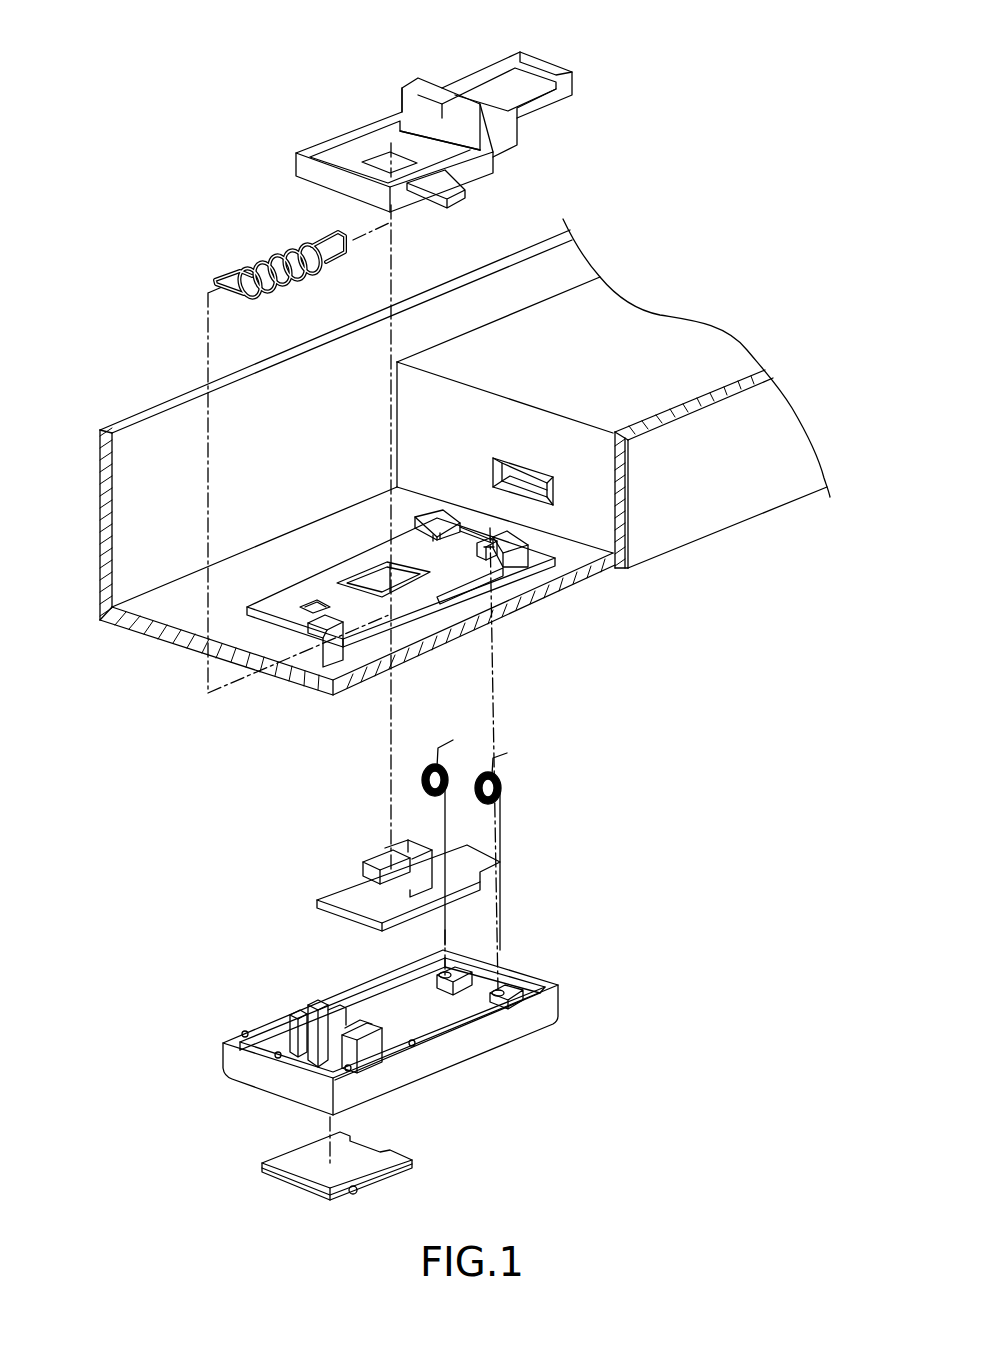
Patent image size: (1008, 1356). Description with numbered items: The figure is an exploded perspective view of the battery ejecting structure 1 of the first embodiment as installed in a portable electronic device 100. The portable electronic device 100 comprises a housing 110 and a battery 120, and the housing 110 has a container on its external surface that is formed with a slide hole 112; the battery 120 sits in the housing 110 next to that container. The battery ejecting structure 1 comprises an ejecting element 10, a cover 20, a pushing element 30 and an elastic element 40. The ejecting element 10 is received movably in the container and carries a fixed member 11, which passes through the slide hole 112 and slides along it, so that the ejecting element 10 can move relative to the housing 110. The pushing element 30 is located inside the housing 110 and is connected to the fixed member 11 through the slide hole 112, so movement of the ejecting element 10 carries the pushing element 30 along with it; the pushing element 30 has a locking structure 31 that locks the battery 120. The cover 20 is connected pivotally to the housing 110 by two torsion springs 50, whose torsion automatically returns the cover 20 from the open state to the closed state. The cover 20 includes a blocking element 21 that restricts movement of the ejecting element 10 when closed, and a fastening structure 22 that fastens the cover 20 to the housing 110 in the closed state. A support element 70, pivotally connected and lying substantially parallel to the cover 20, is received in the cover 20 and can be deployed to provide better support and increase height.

The battery ejecting structure 1 is at (130, 95).
The portable electronic device 100 is at (793, 271).
The housing 110 is at (560, 592).
The battery 120 is at (768, 433).
The slide hole 112 is at (368, 583).
The pushing element 30 is at (375, 120).
The locking structure 31 is at (563, 83).
The elastic element 40 is at (260, 263).
The torsion spring 50 is at (447, 768).
The ejecting element 10 is at (467, 893).
The fixed member 11 is at (377, 857).
The cover 20 is at (540, 1012).
The blocking element 21 is at (370, 1048).
The fastening structure 22 is at (317, 998).
The support element 70 is at (405, 1162).